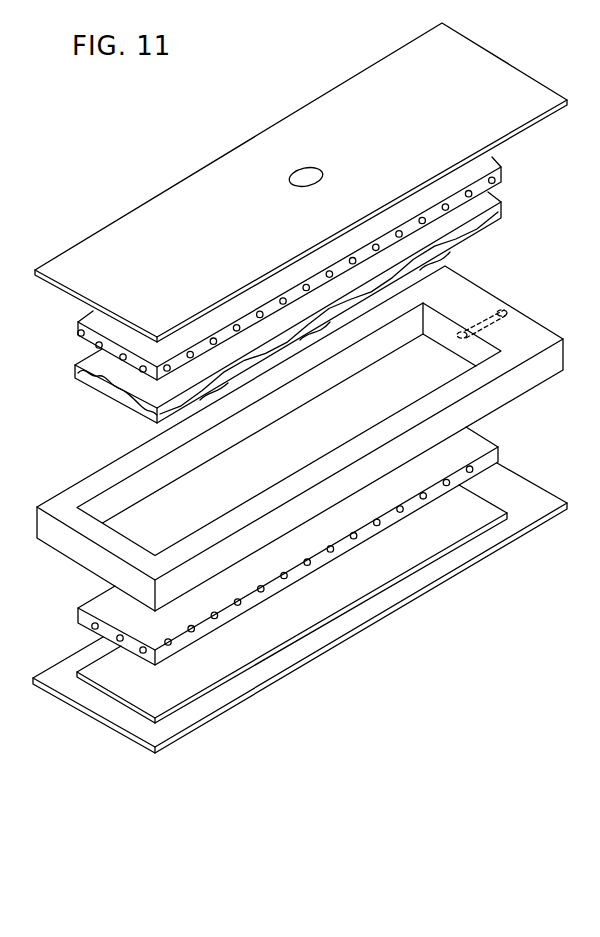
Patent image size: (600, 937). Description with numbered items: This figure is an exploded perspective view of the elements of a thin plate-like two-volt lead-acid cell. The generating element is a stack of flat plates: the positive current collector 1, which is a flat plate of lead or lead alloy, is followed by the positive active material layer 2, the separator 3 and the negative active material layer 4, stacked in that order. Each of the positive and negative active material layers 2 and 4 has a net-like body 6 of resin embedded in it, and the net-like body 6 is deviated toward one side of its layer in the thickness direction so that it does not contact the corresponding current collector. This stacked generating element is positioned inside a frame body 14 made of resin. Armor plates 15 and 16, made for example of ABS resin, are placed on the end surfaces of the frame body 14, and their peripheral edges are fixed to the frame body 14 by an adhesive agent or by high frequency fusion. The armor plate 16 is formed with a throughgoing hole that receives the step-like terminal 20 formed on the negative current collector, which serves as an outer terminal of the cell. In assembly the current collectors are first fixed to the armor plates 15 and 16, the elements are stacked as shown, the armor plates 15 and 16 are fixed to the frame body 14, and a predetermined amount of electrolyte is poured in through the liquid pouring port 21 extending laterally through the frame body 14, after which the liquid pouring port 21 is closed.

The positive current collector 1 is at (227, 667).
The positive active material layer 2 is at (98, 603).
The separator 3 is at (110, 373).
The negative active material layer 4 is at (100, 323).
The net-like body 6 is at (450, 206).
The frame body 14 is at (65, 502).
The armor plate 15 is at (187, 718).
The armor plate 16 is at (223, 173).
The step-like terminal 20 is at (307, 166).
The liquid pouring port 21 is at (497, 306).